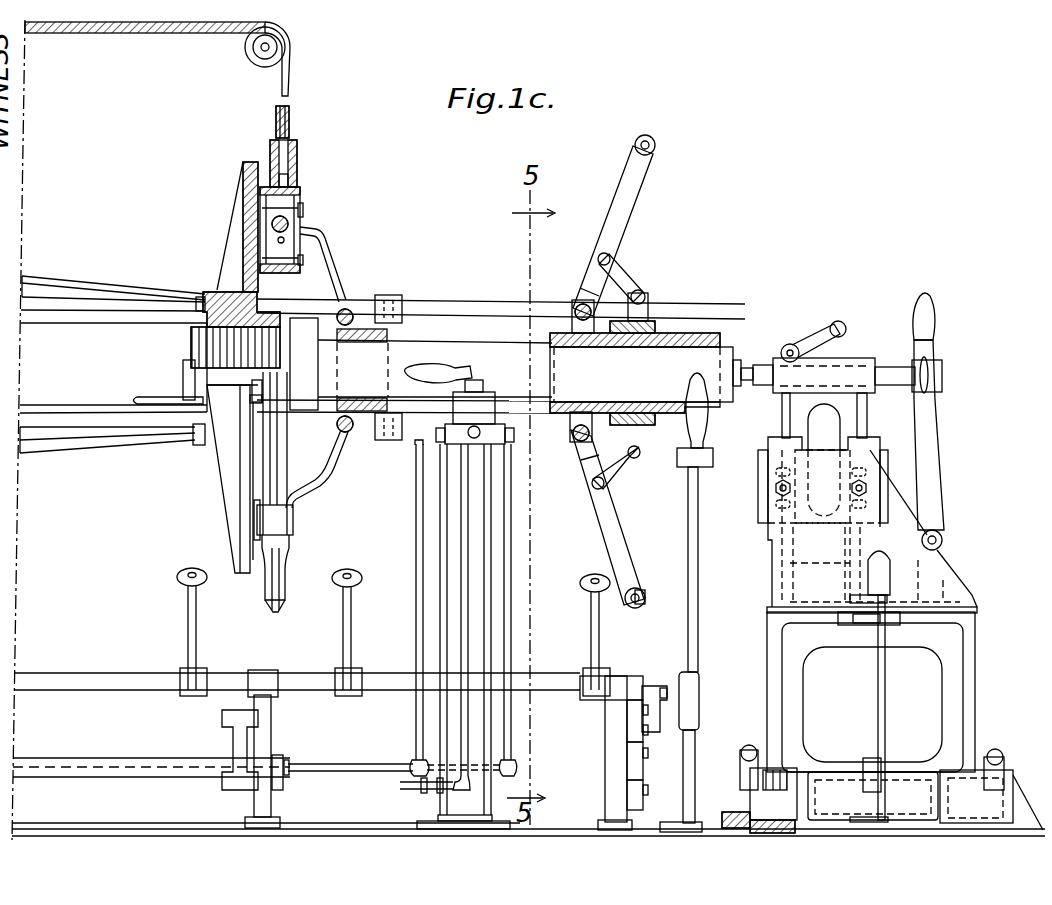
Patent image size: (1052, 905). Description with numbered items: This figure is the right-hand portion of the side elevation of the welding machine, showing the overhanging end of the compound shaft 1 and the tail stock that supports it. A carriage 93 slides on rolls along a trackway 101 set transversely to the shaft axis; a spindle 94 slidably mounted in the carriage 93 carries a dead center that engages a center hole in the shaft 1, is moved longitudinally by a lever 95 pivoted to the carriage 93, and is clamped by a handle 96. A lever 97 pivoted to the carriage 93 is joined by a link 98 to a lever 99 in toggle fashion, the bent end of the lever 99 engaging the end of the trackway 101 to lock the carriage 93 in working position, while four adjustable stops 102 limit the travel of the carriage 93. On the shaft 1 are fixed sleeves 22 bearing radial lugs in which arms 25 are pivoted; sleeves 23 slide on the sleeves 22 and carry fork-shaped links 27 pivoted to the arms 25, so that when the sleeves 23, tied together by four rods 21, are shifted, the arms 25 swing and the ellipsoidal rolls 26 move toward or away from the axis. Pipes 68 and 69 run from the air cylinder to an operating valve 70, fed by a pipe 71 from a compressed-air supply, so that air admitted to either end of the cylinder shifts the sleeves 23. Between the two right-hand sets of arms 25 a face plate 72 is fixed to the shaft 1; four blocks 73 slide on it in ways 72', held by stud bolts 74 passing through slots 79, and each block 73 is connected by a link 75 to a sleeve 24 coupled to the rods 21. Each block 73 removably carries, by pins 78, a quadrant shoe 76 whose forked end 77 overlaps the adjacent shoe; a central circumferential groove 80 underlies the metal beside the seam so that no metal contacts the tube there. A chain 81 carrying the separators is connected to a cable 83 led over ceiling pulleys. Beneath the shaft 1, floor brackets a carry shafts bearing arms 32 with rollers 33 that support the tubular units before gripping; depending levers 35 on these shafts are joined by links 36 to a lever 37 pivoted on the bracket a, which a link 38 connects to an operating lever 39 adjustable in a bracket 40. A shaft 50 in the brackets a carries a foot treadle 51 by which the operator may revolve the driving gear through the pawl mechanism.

The shaft 1 is at (113, 364).
The rods 21 is at (441, 306).
The sleeve 22 is at (566, 400).
The sleeve 23 is at (652, 320).
The sleeve 24 is at (362, 370).
The arm 25 is at (637, 190).
The roll 26 is at (653, 143).
The link 27 is at (623, 280).
The arms 32 is at (188, 620).
The rollers 33 is at (183, 572).
The depending lever 35 is at (628, 718).
The links 36 is at (632, 777).
The lever 37 is at (632, 808).
The link 38 is at (660, 680).
The operating lever 39 is at (686, 498).
The bracket 40 is at (688, 750).
The shaft 50 is at (35, 758).
The foot treadle 51 is at (222, 720).
The pipe 68 is at (514, 498).
The pipe 69 is at (416, 463).
The operating valve 70 is at (478, 400).
The pipe 71 is at (470, 498).
The face plate 72 is at (217, 367).
The ways 72' is at (231, 419).
The blocks 73 is at (299, 188).
The stud bolts 74 is at (303, 208).
The link 75 is at (320, 246).
The shoe 76 is at (297, 152).
The forked extremity 77 is at (294, 523).
The pins 78 is at (298, 242).
The slots 79 is at (300, 196).
The groove 80 is at (268, 596).
The chain 81 is at (292, 120).
The cable 83 is at (152, 33).
The carriage 93 is at (960, 590).
The spindle 94 is at (745, 368).
The lever 95 is at (926, 297).
The handle 96 is at (836, 322).
The lever 97 is at (865, 560).
The link 98 is at (884, 692).
The lever 99 is at (867, 760).
The trackway 101 is at (732, 792).
The adjustable stops 102 is at (746, 746).
The brackets a is at (615, 745).